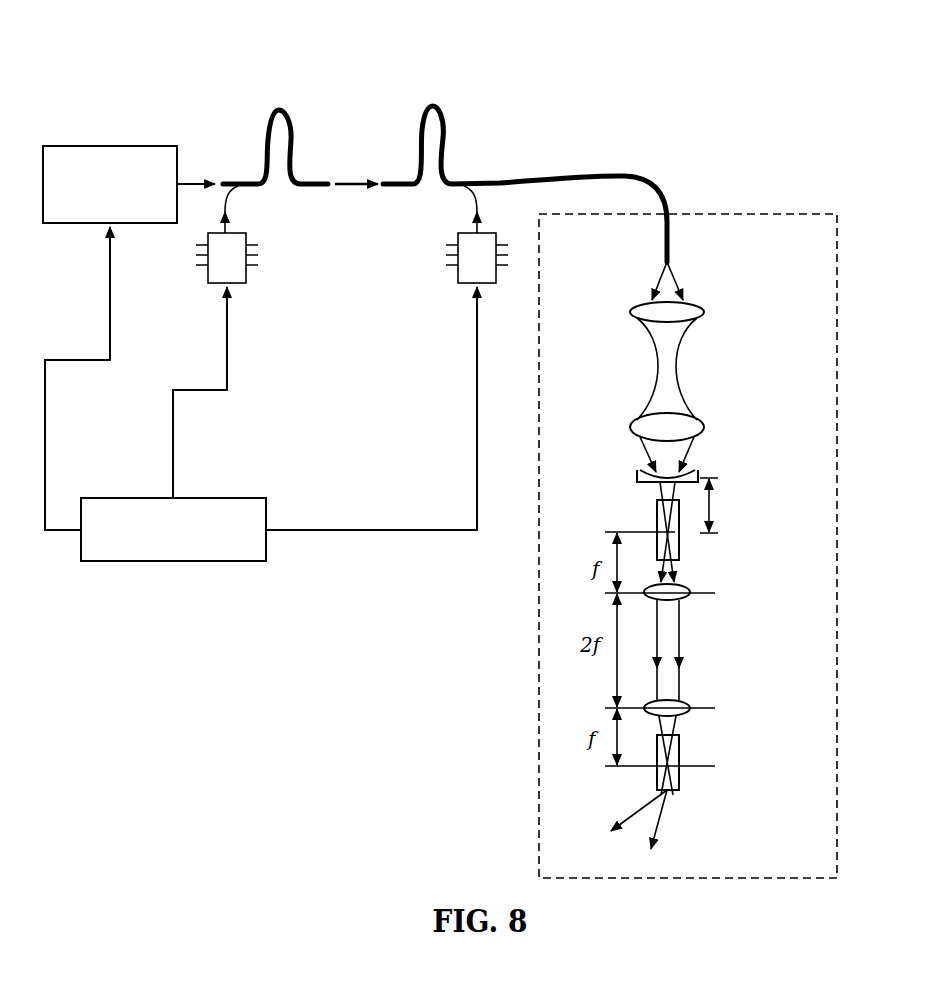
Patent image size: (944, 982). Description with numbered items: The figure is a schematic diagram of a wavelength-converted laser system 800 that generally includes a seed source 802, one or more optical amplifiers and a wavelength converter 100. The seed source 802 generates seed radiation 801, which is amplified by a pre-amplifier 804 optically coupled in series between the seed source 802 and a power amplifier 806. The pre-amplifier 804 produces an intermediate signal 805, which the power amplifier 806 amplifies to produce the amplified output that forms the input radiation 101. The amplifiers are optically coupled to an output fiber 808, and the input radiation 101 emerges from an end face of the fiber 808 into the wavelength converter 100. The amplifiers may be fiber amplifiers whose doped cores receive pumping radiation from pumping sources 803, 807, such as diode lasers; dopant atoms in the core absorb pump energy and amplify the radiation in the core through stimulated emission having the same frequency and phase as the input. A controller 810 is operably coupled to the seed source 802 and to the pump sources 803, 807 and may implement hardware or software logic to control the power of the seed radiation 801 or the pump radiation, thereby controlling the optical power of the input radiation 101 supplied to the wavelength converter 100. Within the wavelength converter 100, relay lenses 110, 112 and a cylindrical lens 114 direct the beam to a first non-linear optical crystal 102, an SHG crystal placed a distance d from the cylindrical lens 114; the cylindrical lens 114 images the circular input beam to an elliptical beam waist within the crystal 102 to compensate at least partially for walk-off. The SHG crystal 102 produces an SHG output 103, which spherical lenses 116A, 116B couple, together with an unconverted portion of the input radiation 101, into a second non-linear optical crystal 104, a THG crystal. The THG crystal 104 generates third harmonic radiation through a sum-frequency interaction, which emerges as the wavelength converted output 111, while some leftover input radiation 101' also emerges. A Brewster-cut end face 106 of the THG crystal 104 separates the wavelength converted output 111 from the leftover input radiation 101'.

The wavelength-converted laser system 800 is at (190, 62).
The seed source 802 is at (130, 146).
The seed radiation 801 is at (214, 181).
The pre-amplifier 804 is at (268, 112).
The intermediate signal 805 is at (346, 182).
The power amplifier 806 is at (440, 110).
The output fiber 808 is at (510, 179).
The pumping source 803 is at (249, 286).
The pumping source 807 is at (489, 286).
The controller 810 is at (172, 562).
The wavelength converter 100 is at (539, 690).
The input radiation 101 is at (714, 275).
The relay lens 110 is at (703, 312).
The relay lens 112 is at (703, 428).
The cylindrical lens 114 is at (715, 496).
The first non-linear optical crystal 102 is at (680, 546).
The SHG output 103 is at (680, 580).
The spherical lens 116A is at (692, 598).
The spherical lens 116B is at (692, 698).
The second non-linear optical crystal 104 is at (680, 745).
The Brewster-cut end face 106 is at (682, 806).
The wavelength converted output 111 is at (640, 808).
The leftover input radiation 101' is at (709, 828).